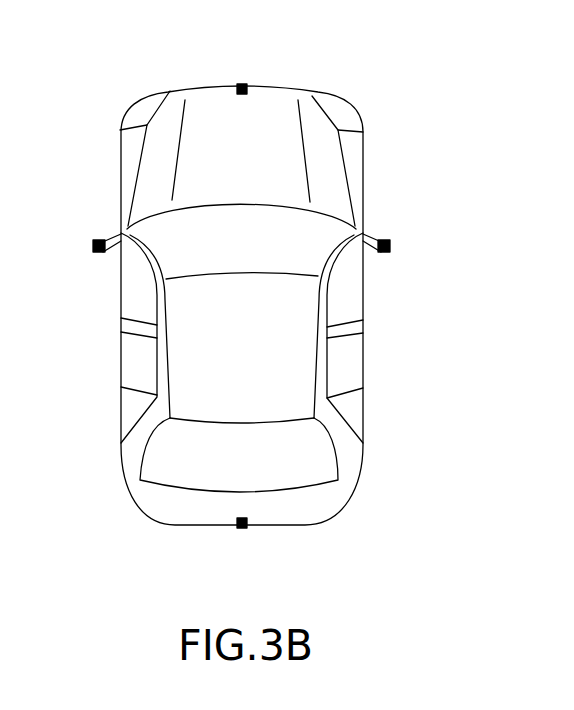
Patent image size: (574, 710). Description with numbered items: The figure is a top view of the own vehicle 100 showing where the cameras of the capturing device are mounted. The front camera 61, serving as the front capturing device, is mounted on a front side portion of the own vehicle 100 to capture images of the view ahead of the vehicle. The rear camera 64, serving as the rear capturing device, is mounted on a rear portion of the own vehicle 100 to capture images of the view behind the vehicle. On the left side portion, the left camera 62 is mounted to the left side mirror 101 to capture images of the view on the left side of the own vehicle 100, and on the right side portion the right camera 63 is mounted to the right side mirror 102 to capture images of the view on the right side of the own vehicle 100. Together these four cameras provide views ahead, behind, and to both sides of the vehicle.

The front camera 61 is at (241, 84).
The left camera 62 is at (97, 242).
The right camera 63 is at (386, 242).
The rear camera 64 is at (242, 528).
The own vehicle 100 is at (363, 348).
The left side mirror 101 is at (109, 248).
The right side mirror 102 is at (373, 248).